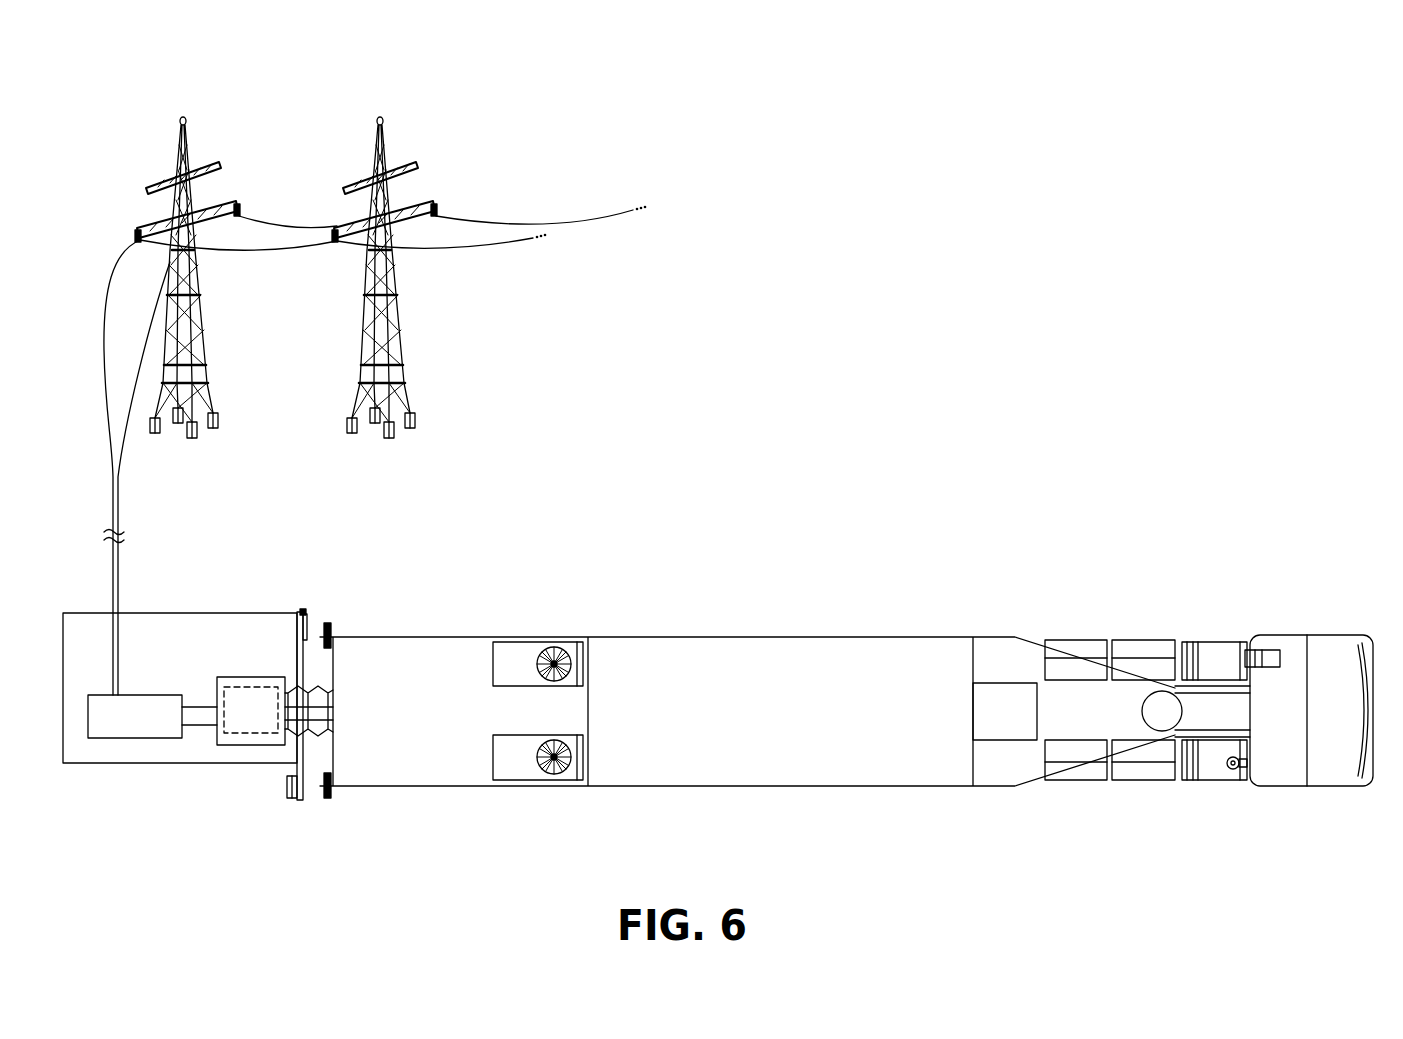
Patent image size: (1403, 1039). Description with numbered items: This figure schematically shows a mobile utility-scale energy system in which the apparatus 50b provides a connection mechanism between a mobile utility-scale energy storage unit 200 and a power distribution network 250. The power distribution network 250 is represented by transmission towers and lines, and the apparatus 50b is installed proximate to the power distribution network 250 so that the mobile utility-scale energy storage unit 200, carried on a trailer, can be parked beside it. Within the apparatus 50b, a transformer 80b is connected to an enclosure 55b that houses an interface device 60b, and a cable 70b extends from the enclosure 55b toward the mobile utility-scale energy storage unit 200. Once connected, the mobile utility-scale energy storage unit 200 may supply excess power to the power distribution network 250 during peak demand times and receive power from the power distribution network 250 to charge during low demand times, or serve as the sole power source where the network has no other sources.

The power distribution network 250 is at (290, 97).
The apparatus 50b is at (206, 659).
The transformer 80b is at (162, 695).
The enclosure 55b is at (248, 677).
The interface device 60b is at (250, 735).
The cable 70b is at (293, 735).
The mobile utility-scale energy storage unit 200 is at (1075, 559).